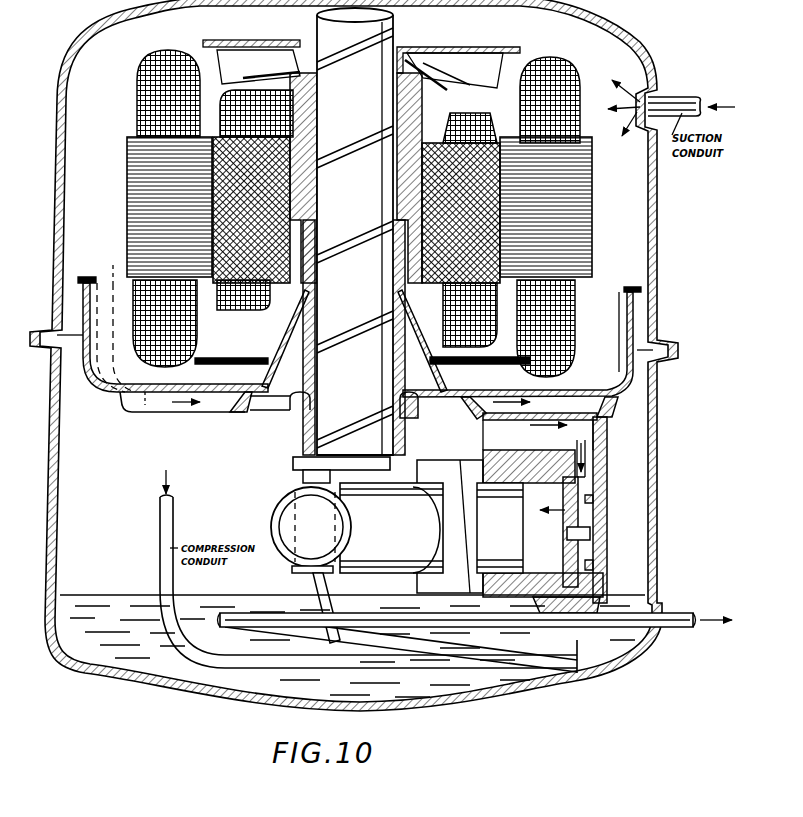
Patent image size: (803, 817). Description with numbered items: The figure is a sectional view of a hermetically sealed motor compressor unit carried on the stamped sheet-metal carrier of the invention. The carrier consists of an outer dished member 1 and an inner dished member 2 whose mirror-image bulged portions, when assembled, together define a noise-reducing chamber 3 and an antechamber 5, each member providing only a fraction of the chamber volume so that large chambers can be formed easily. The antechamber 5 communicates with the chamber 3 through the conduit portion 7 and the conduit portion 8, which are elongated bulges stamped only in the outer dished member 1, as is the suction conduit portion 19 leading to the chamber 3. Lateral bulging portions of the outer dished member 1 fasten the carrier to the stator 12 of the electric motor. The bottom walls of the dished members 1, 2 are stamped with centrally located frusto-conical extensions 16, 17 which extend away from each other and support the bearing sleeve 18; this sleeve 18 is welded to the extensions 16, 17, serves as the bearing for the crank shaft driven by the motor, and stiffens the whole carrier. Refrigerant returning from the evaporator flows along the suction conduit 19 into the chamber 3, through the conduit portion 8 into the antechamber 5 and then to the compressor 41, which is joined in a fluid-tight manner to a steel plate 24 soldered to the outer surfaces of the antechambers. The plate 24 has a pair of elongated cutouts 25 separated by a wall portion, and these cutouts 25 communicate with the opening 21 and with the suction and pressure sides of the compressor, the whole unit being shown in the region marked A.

The outer dished member 1 is at (637, 310).
The inner dished member 2 is at (629, 286).
The noise-reducing chamber 3 is at (200, 412).
The antechamber 5 is at (598, 404).
The conduit portion 7 is at (265, 406).
The conduit portion 8 is at (470, 405).
The stator 12 is at (593, 189).
The frusto-conical extension 16 is at (405, 420).
The frusto-conical extension 17 is at (286, 342).
The bearing sleeve 18 is at (309, 271).
The suction conduit portion 19 is at (145, 428).
The opening 21 is at (540, 418).
The steel plate 24 is at (603, 437).
The elongated cutout 25 is at (553, 443).
The compressor 41 is at (558, 532).
The compressor unit A is at (618, 533).